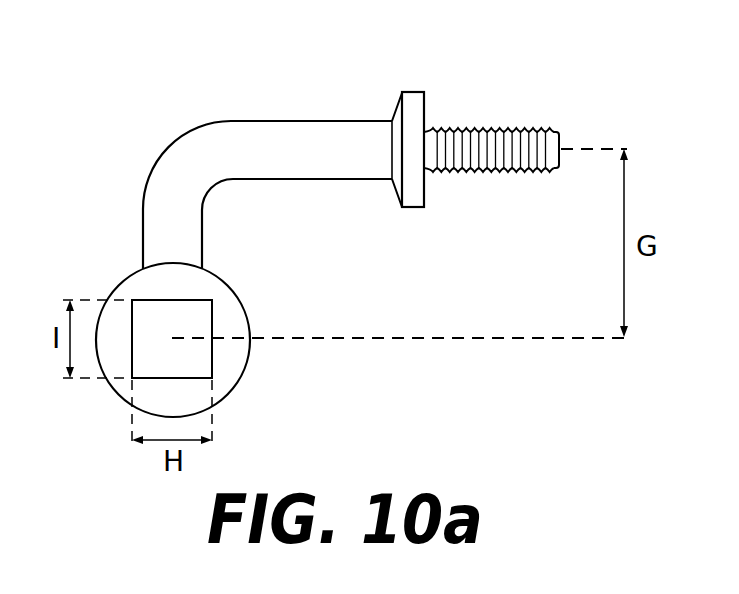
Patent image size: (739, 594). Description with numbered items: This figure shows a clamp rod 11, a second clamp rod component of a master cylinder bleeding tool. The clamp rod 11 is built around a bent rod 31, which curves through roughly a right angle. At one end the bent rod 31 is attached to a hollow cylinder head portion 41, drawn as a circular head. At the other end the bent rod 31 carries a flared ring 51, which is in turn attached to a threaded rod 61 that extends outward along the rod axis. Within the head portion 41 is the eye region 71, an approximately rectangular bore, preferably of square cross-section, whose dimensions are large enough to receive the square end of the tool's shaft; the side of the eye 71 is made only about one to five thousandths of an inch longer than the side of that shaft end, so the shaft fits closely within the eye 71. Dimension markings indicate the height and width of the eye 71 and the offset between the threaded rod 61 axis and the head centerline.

The clamp rod 11 is at (288, 69).
The bent rod 31 is at (227, 121).
The flared ring 51 is at (412, 92).
The threaded rod 61 is at (548, 130).
The hollow cylinder head portion 41 is at (235, 290).
The eye region 71 is at (212, 357).